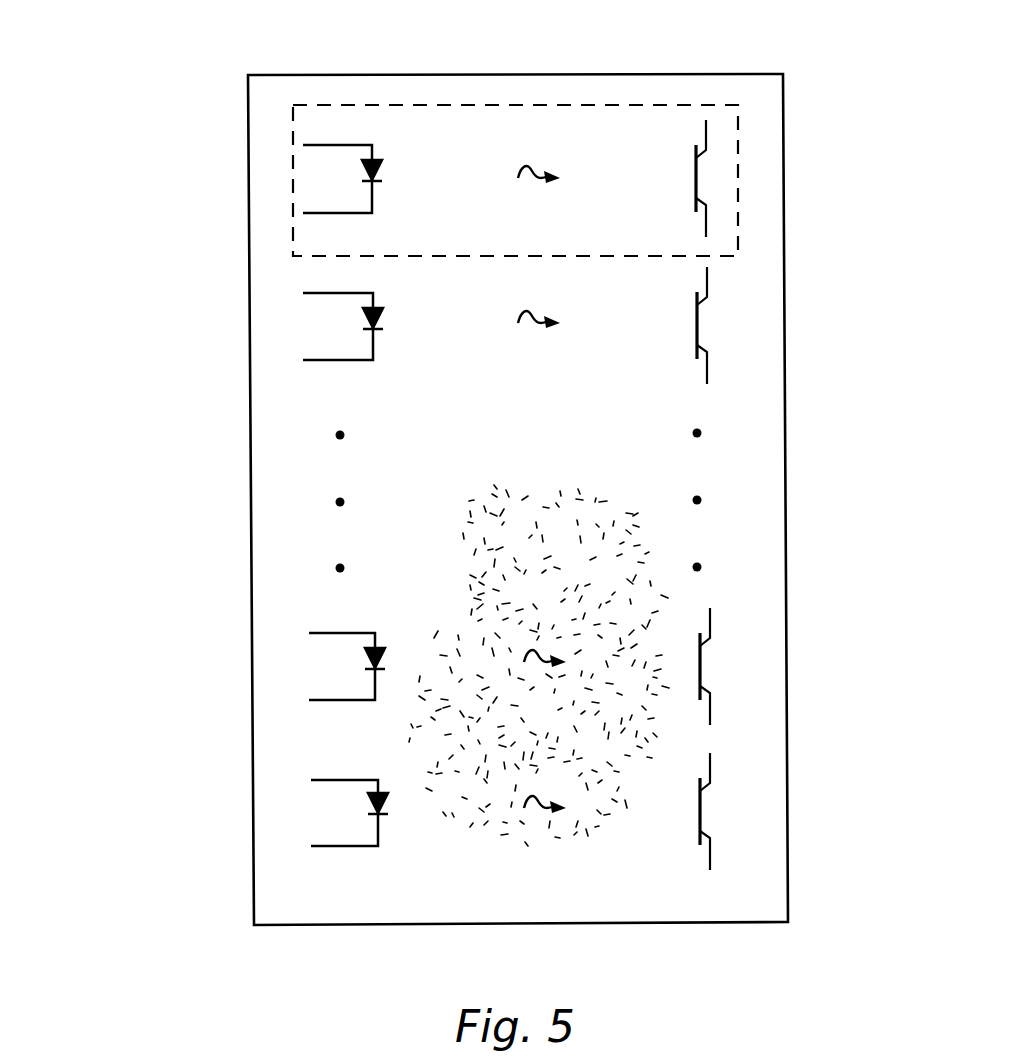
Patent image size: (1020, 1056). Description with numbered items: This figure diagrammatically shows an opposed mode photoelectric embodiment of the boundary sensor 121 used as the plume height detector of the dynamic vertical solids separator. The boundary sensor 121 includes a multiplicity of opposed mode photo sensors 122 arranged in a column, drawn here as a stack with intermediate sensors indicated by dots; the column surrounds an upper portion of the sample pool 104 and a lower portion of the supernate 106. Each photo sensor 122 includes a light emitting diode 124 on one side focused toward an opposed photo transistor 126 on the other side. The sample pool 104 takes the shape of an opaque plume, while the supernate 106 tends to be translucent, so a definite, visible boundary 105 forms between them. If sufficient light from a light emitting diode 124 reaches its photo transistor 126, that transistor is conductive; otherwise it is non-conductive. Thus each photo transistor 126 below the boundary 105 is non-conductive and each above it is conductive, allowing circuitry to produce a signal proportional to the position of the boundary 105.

The boundary sensor 121 is at (210, 172).
The opposed mode photo sensor 122 is at (530, 90).
The light emitting diode 124 is at (352, 177).
The photo transistor 126 is at (708, 175).
The sample pool 104 is at (660, 555).
The boundary 105 is at (605, 477).
The supernate 106 is at (535, 420).